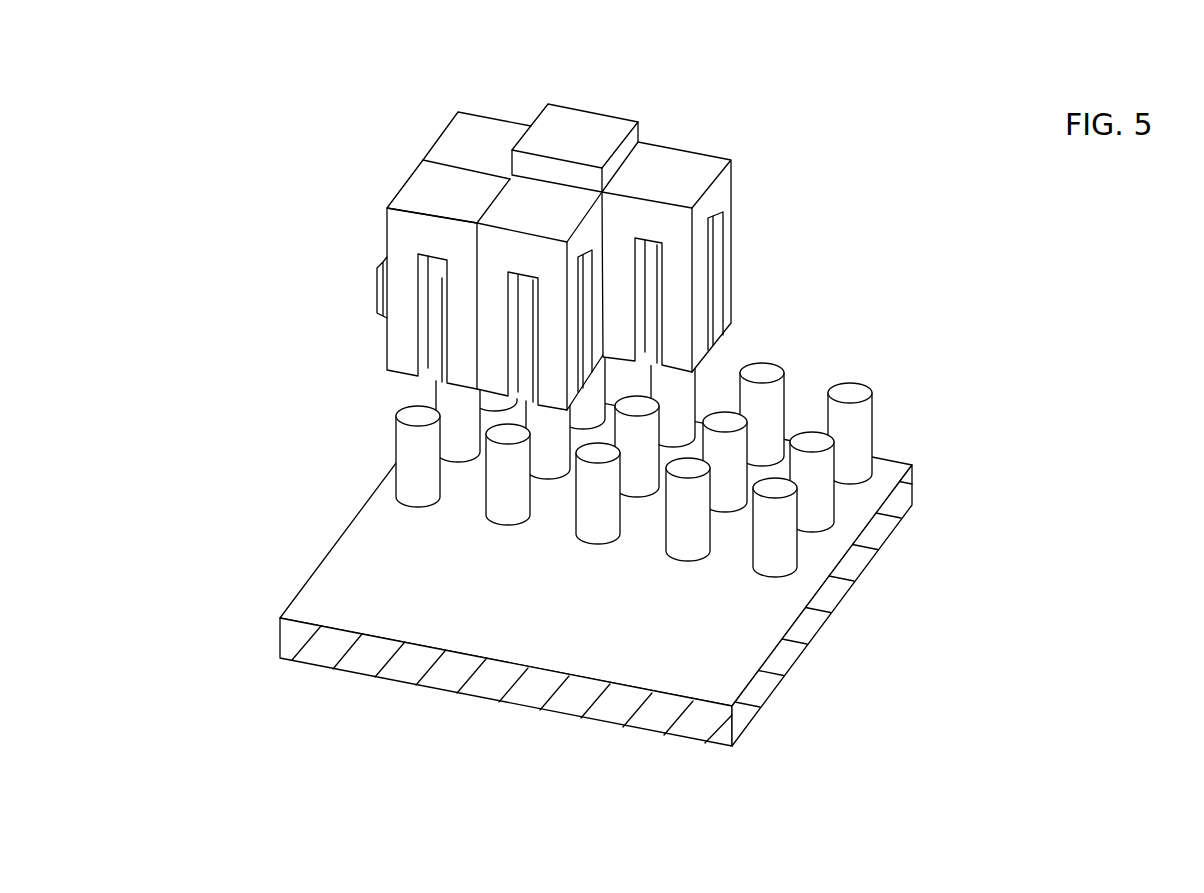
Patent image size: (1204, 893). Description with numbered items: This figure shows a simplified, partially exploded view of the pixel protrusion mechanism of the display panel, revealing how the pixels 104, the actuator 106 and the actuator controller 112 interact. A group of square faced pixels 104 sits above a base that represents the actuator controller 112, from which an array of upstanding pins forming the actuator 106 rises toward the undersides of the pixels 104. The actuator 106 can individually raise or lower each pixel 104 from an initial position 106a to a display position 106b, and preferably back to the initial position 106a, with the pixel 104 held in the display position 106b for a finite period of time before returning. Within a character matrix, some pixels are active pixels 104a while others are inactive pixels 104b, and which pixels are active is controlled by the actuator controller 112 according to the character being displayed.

The pixel 104 is at (526, 225).
The active pixel 104a is at (678, 117).
The inactive pixel 104b is at (424, 184).
The actuator 106 is at (780, 356).
The initial position 106a is at (480, 137).
The display position 106b is at (580, 134).
The actuator controller 112 is at (746, 598).